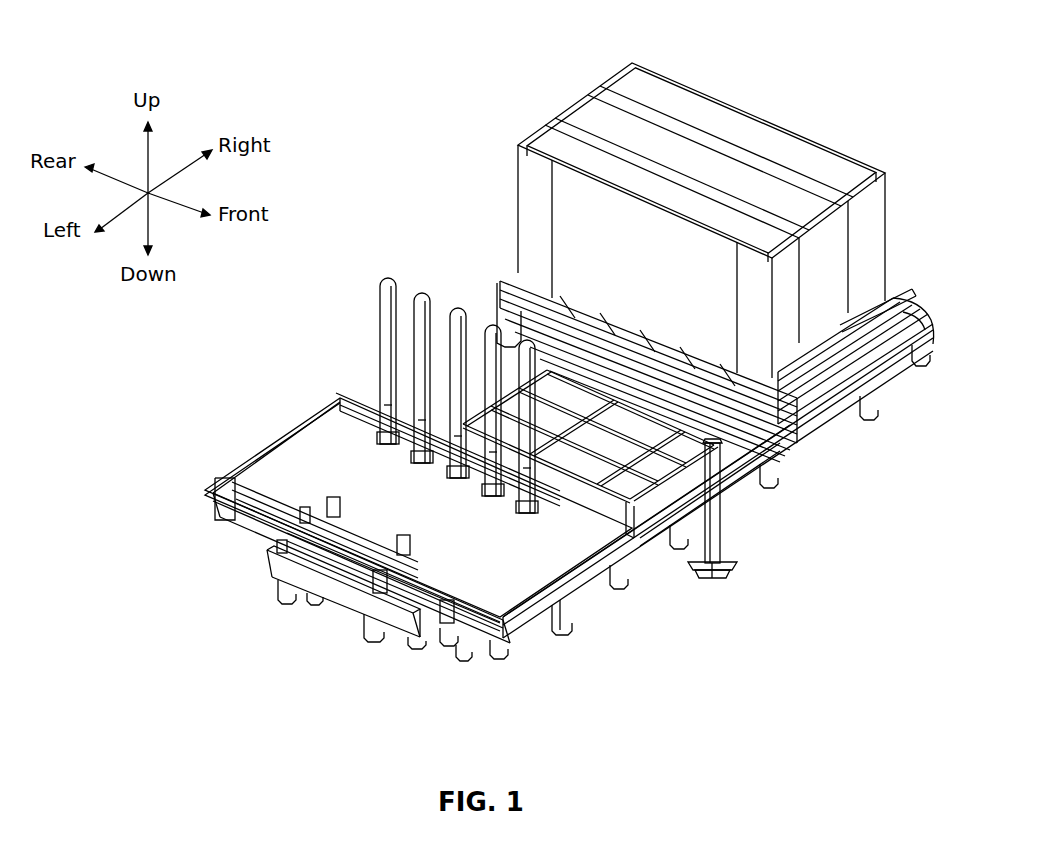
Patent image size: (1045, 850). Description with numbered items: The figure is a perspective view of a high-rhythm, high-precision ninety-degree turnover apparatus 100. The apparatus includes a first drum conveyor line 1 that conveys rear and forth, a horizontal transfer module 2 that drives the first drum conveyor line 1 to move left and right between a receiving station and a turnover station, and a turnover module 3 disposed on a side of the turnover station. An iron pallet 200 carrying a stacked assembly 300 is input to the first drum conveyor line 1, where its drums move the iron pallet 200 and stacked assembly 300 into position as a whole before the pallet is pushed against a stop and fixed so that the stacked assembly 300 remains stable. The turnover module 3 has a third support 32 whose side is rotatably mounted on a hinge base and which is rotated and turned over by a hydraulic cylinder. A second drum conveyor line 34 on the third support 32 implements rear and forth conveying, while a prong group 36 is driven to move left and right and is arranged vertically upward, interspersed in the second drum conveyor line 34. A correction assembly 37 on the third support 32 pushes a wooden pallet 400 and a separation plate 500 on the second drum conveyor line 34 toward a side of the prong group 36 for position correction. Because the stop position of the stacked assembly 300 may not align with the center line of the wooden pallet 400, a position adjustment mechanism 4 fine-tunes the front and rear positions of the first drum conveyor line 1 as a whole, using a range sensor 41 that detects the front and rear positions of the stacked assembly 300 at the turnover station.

The first drum conveyor line 1 is at (807, 412).
The horizontal transfer module 2 is at (730, 490).
The turnover module 3 is at (268, 437).
The position adjustment mechanism 4 is at (777, 463).
The third support 32 is at (465, 613).
The second drum conveyor line 34 is at (560, 640).
The prong group 36 is at (376, 335).
The correction assembly 37 is at (363, 595).
The range sensor 41 is at (725, 500).
The turnover apparatus 100 is at (346, 108).
The iron pallet 200 is at (857, 384).
The stacked assembly 300 is at (731, 108).
The wooden pallet 400 is at (262, 519).
The separation plate 500 is at (333, 440).